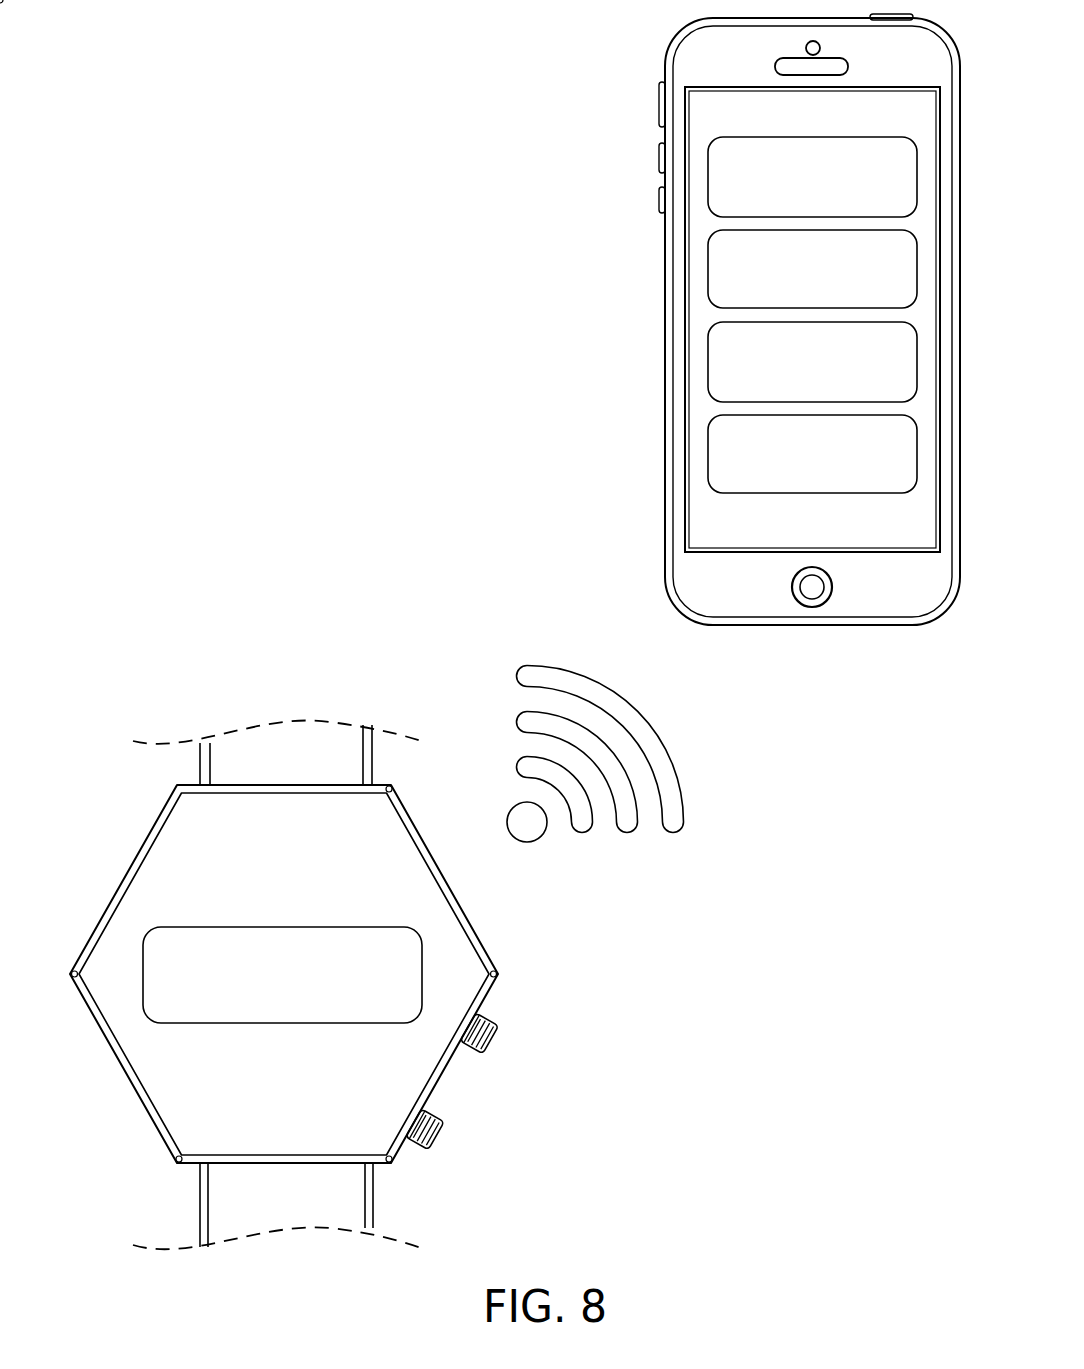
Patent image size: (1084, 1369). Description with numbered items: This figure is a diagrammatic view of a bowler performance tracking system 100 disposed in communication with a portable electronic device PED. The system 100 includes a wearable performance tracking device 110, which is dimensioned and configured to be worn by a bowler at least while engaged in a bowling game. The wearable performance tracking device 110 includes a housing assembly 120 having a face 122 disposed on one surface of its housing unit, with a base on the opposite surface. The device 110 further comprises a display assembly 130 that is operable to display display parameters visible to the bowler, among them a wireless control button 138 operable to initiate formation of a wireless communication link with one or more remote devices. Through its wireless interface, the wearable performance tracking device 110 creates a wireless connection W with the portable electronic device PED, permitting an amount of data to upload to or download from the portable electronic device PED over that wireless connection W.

The bowler performance tracking system 100 is at (463, 470).
The wearable performance tracking device 110 is at (149, 1144).
The housing assembly 120 is at (102, 892).
The face 122 is at (163, 822).
The display assembly 130 is at (476, 1080).
The wireless control button 138 is at (267, 927).
The portable electronic device PED is at (665, 280).
The wireless connection W is at (633, 830).